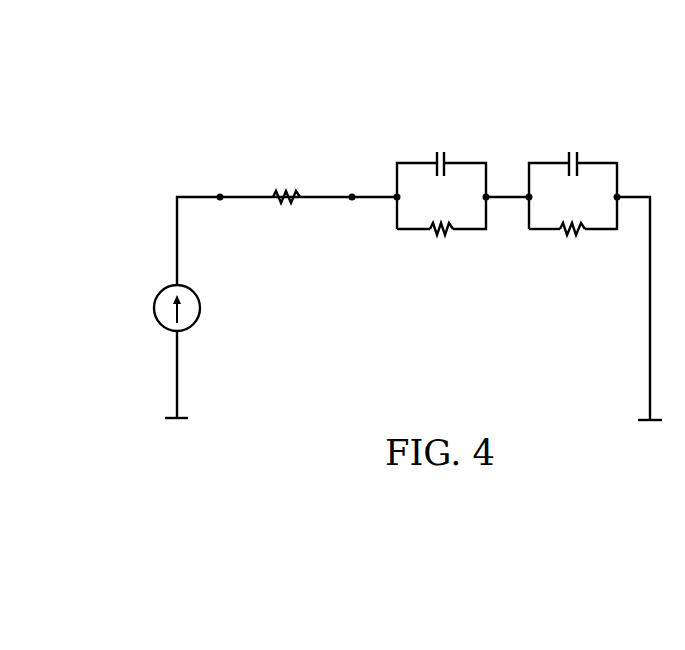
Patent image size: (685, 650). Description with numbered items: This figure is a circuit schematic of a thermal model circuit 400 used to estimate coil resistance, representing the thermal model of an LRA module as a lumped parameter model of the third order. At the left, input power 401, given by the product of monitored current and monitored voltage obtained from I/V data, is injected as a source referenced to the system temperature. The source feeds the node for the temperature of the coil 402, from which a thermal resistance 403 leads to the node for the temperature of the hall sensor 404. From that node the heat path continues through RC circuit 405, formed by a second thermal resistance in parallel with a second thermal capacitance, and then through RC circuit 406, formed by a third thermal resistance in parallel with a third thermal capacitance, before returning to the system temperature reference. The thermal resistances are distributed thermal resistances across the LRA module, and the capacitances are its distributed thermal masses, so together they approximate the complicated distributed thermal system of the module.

The thermal model circuit 400 is at (328, 105).
The input power 401 is at (164, 333).
The temperature of the coil 402 is at (220, 203).
The thermal resistance 403 is at (285, 203).
The temperature of the hall sensor 404 is at (353, 203).
The RC circuit 405 is at (481, 135).
The RC circuit 406 is at (615, 131).